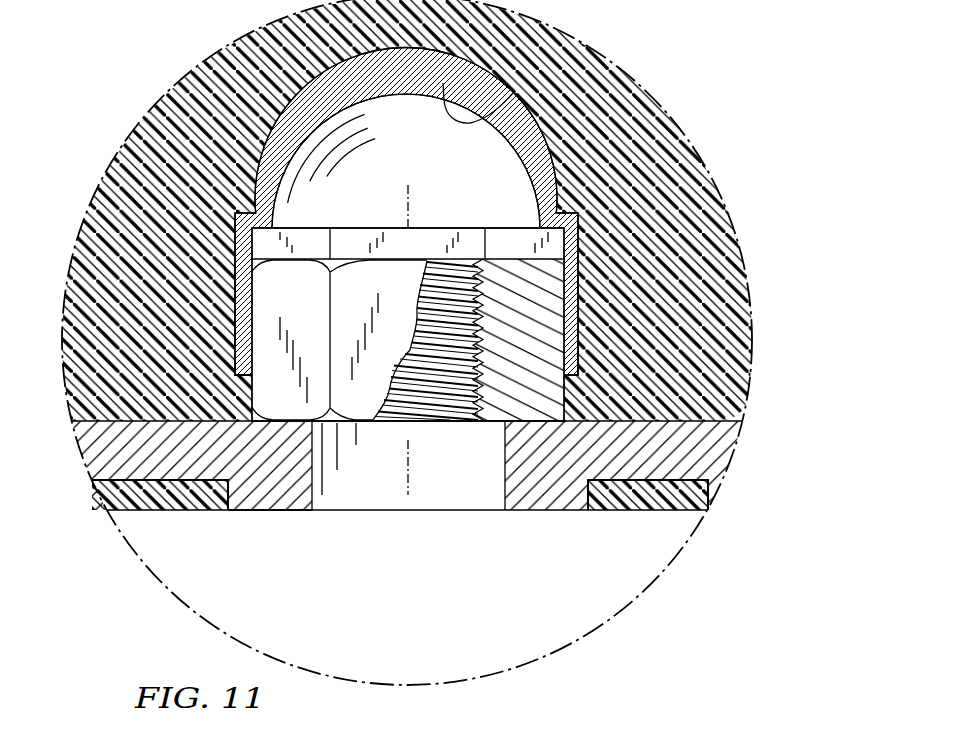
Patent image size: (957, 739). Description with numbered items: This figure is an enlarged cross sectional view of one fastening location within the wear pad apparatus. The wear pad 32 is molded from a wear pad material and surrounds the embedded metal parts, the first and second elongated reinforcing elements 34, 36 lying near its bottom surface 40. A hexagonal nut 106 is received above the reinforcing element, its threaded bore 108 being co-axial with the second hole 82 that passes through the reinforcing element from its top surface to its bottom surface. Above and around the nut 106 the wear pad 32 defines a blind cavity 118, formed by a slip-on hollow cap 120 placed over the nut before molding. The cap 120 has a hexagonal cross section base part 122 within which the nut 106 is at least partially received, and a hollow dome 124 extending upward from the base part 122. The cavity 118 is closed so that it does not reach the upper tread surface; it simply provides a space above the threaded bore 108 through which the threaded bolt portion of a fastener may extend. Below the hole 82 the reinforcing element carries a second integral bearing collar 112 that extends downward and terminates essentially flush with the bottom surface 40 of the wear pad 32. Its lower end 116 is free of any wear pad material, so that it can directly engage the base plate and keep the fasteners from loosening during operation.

The wear pad 32 is at (630, 112).
The blind cavity 118 is at (513, 93).
The slip-on hollow cap 120 is at (543, 160).
The hollow dome 124 is at (406, 234).
The hexagonal nut 106 is at (580, 305).
The hexagonal cross section base part 122 is at (537, 290).
The threaded bore 108 is at (482, 367).
The second elongated reinforcing element 36 is at (706, 455).
The bottom surface 40 is at (145, 512).
The second integral bearing collar 112 is at (253, 495).
The lower end 116 is at (273, 512).
The second hole 82 is at (505, 478).
The first elongated reinforcing element 34 is at (585, 738).